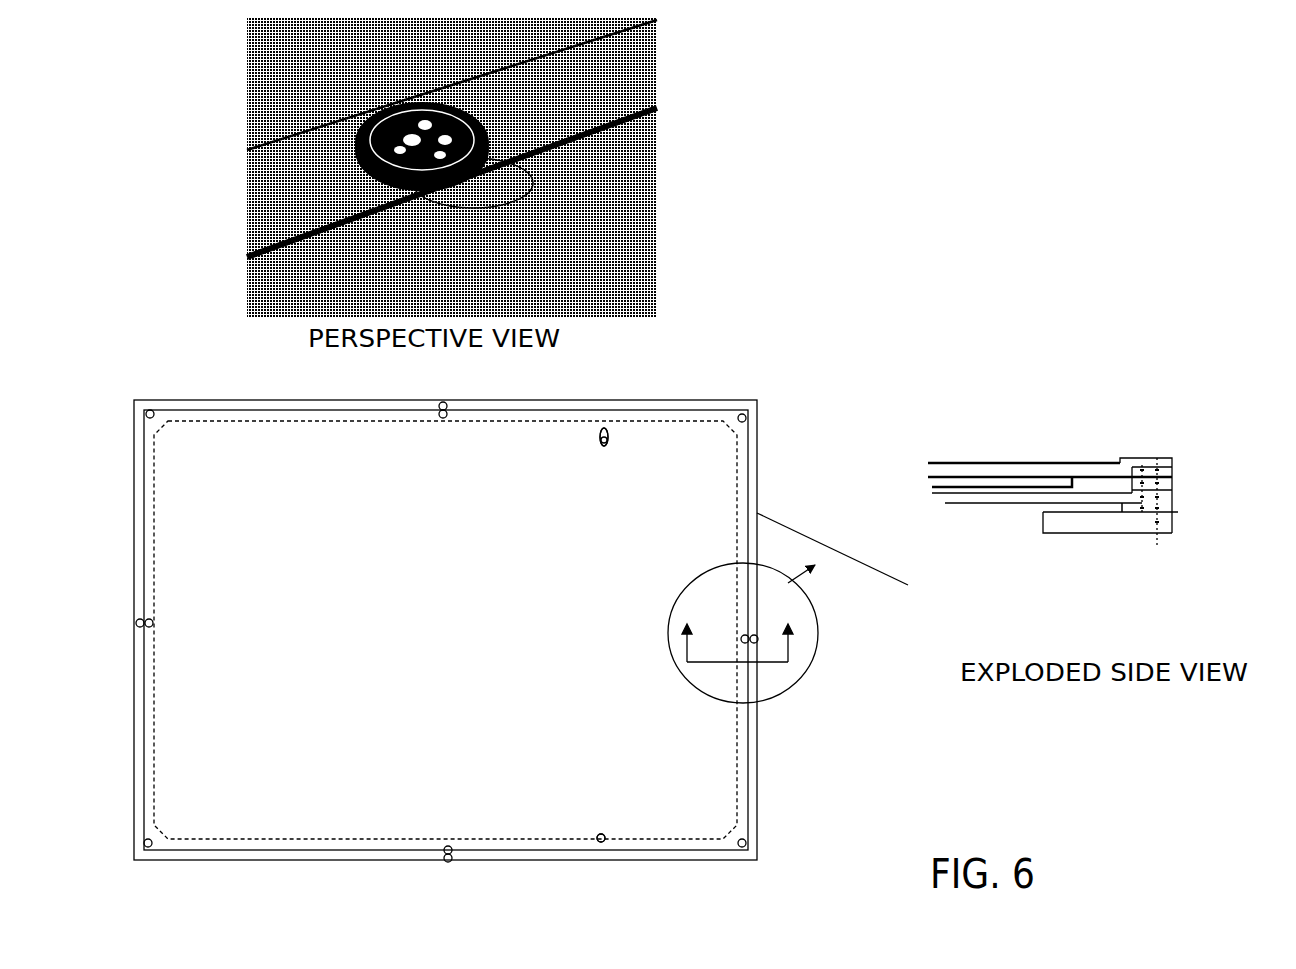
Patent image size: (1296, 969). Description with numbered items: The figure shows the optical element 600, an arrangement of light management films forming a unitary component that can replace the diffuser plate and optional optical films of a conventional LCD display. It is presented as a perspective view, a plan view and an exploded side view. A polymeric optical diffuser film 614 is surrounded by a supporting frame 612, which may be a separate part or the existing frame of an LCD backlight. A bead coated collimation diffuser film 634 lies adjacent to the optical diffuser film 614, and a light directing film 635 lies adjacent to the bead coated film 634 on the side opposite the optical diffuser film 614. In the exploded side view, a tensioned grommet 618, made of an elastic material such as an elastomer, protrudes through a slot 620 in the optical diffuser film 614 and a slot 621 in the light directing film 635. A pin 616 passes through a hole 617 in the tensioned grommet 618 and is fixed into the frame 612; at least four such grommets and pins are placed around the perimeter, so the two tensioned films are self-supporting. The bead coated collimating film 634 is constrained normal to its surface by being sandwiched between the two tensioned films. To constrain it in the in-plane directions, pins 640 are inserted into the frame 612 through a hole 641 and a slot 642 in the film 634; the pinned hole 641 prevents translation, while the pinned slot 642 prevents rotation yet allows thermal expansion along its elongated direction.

The optical element 600 is at (915, 222).
The supporting frame 612 is at (1070, 528).
The polymeric optical diffuser film 614 is at (1032, 497).
The pin 616 is at (1148, 510).
The hole 617 is at (1150, 462).
The tensioned grommet 618 is at (1165, 458).
The slot 620 is at (1102, 497).
The slot 621 is at (1088, 468).
The bead coated collimation diffuser film 634 is at (968, 488).
The light directing film 635 is at (1052, 468).
The pins 640 is at (598, 438).
The hole 641 is at (604, 835).
The slot 642 is at (608, 447).